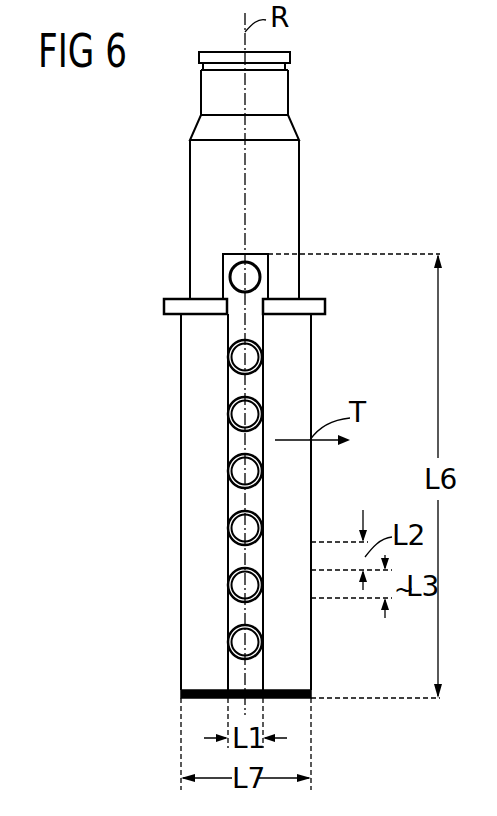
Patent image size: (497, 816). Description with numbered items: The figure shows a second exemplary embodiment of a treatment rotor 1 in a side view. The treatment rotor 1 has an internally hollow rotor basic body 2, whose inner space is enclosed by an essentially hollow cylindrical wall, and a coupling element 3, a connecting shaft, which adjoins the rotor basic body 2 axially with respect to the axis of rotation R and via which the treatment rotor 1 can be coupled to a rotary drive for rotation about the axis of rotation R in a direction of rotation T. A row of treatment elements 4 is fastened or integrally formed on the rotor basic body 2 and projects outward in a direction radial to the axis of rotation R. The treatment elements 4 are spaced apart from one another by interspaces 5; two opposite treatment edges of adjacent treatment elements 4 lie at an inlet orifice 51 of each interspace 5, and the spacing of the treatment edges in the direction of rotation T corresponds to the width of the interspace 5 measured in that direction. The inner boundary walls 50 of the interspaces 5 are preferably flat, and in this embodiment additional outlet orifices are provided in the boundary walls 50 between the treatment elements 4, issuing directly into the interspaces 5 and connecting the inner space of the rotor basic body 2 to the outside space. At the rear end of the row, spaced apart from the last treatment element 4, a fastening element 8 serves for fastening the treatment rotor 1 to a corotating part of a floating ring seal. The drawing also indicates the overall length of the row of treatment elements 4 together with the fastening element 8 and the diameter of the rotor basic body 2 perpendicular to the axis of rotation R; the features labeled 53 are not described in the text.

The treatment rotor 1 is at (360, 168).
The rotor basic body 2 is at (200, 672).
The coupling element 3 is at (223, 192).
The treatment element 4 is at (230, 445).
The interspace 5 is at (243, 413).
The fastening element 8 is at (238, 326).
The boundary wall 50 is at (232, 368).
The inlet orifice 51 is at (262, 470).
The pocket edge 53 is at (240, 462).